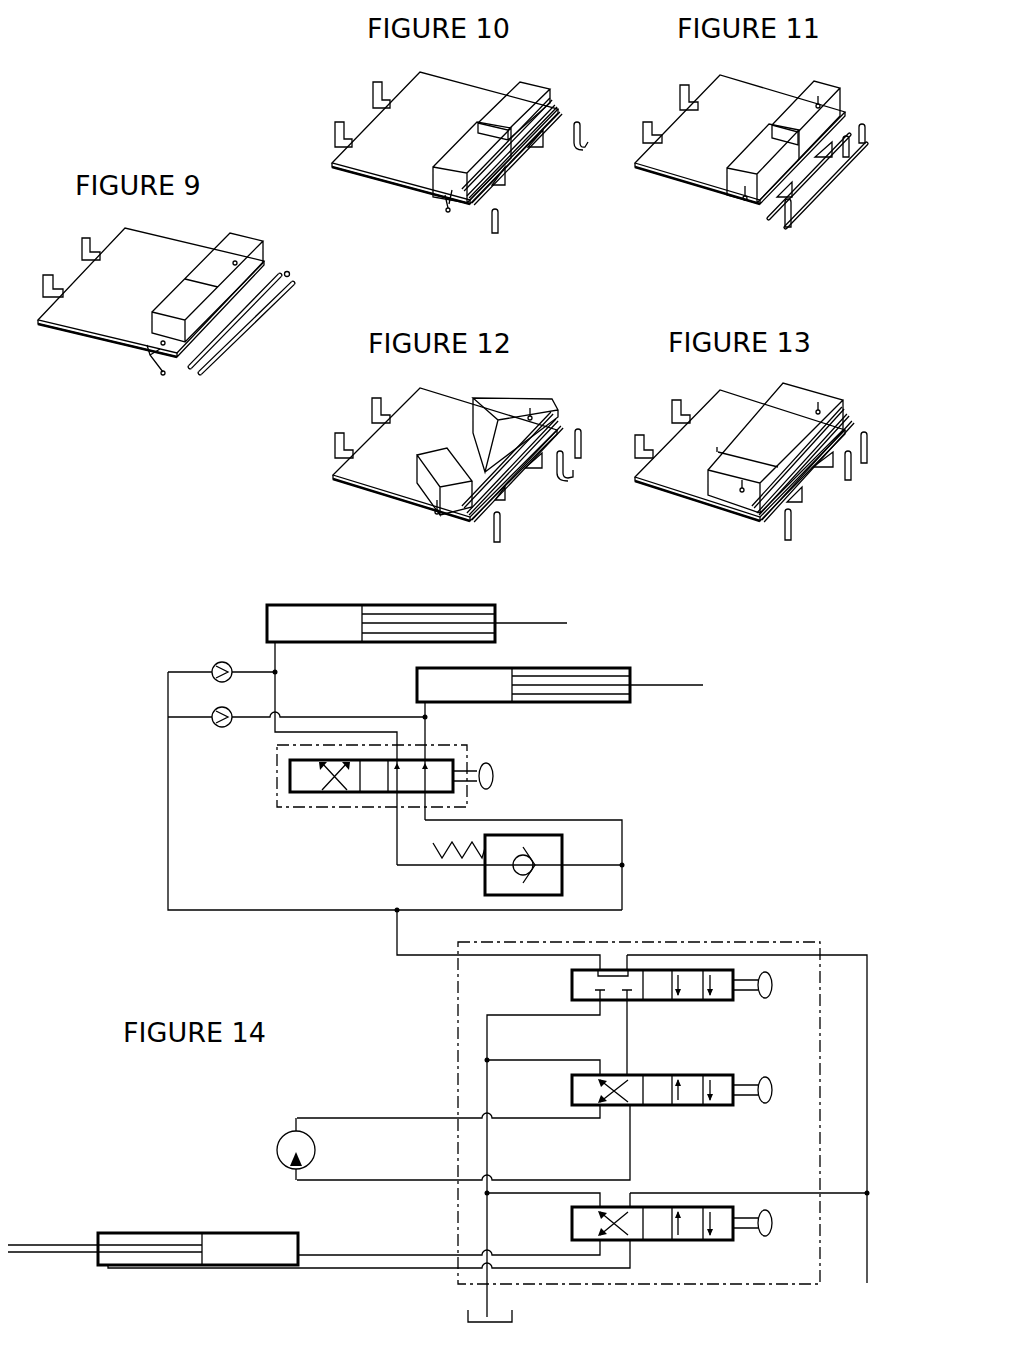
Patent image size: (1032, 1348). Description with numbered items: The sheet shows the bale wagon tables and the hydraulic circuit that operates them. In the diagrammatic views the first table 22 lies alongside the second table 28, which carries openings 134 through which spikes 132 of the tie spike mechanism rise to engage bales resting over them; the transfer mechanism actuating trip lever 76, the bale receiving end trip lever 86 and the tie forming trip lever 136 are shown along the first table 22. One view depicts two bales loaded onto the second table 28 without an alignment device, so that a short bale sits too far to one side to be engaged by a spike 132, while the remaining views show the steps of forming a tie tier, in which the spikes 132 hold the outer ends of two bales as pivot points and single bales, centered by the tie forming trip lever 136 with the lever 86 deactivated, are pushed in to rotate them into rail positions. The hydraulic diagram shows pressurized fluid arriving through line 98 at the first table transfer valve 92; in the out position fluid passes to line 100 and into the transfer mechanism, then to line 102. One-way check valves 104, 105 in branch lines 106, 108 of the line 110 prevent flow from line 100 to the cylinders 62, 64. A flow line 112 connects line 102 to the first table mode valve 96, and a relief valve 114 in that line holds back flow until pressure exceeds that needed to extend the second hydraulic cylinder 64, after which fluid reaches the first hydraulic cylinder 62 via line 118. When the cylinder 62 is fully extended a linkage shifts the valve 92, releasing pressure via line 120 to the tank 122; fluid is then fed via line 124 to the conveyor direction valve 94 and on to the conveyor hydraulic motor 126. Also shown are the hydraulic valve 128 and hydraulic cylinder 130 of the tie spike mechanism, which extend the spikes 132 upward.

In FIG. 9, the first table 22 is at (248, 332).
In FIG. 11, the first table 22 is at (828, 188).
In FIG. 12, the first table 22 is at (517, 475).
In FIG. 13, the first table 22 is at (803, 464).
In FIG. 9, the second table 28 is at (95, 288).
In FIG. 10, the second table 28 is at (377, 145).
In FIG. 11, the second table 28 is at (690, 140).
In FIG. 12, the second table 28 is at (377, 448).
In FIG. 13, the second table 28 is at (677, 455).
In FIG. 14, the first hydraulic cylinder 62 is at (290, 605).
In FIG. 14, the second hydraulic cylinder 64 is at (418, 687).
In FIG. 9, the transfer mechanism actuating trip lever 76 is at (290, 272).
In FIG. 10, the transfer mechanism actuating trip lever 76 is at (578, 120).
In FIG. 11, the transfer mechanism actuating trip lever 76 is at (862, 125).
In FIG. 12, the transfer mechanism actuating trip lever 76 is at (578, 430).
In FIG. 13, the transfer mechanism actuating trip lever 76 is at (865, 465).
In FIG. 10, the bale receiving end trip lever 86 is at (500, 228).
In FIG. 11, the bale receiving end trip lever 86 is at (793, 212).
In FIG. 12, the bale receiving end trip lever 86 is at (494, 533).
In FIG. 13, the bale receiving end trip lever 86 is at (789, 542).
In FIG. 14, the first table transfer valve 92 is at (715, 1002).
In FIG. 14, the conveyor direction valve 94 is at (713, 1108).
In FIG. 14, the first table mode valve 96 is at (305, 795).
In FIG. 14, the line 98 is at (867, 1110).
In FIG. 14, the line 100 is at (397, 942).
In FIG. 14, the line 102 is at (622, 887).
In FIG. 14, the one-way check valve 104 is at (215, 707).
In FIG. 14, the one-way check valve 105 is at (213, 663).
In FIG. 14, the branch line 106 is at (260, 703).
In FIG. 14, the branch line 108 is at (250, 668).
In FIG. 14, the line 110 is at (168, 820).
In FIG. 14, the flow line 112 is at (598, 863).
In FIG. 14, the relief valve 114 is at (487, 882).
In FIG. 14, the line 118 is at (277, 660).
In FIG. 14, the line 120 is at (502, 1013).
In FIG. 14, the tank 122 is at (513, 1320).
In FIG. 14, the line 124 is at (627, 1040).
In FIG. 14, the conveyor hydraulic motor 126 is at (277, 1150).
In FIG. 14, the hydraulic valve 128 is at (720, 1240).
In FIG. 14, the hydraulic cylinder 130 is at (202, 1233).
In FIG. 9, the spike 132 is at (163, 375).
In FIG. 10, the spike 132 is at (448, 214).
In FIG. 11, the spike 132 is at (815, 98).
In FIG. 12, the spike 132 is at (531, 412).
In FIG. 13, the spike 132 is at (819, 405).
In FIG. 9, the opening 134 is at (233, 262).
In FIG. 11, the tie forming trip lever 136 is at (847, 160).
In FIG. 12, the tie forming trip lever 136 is at (573, 481).
In FIG. 13, the tie forming trip lever 136 is at (846, 482).